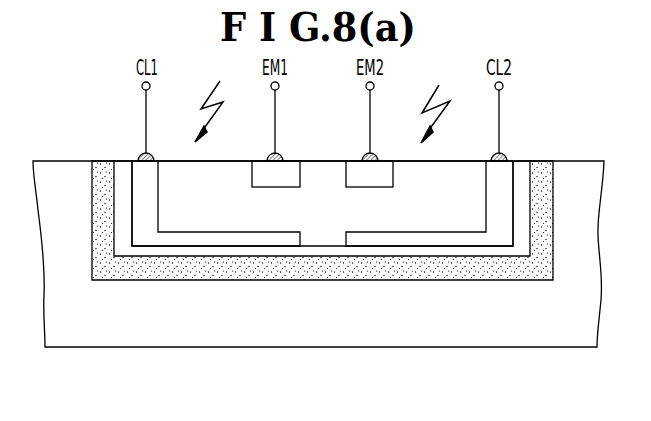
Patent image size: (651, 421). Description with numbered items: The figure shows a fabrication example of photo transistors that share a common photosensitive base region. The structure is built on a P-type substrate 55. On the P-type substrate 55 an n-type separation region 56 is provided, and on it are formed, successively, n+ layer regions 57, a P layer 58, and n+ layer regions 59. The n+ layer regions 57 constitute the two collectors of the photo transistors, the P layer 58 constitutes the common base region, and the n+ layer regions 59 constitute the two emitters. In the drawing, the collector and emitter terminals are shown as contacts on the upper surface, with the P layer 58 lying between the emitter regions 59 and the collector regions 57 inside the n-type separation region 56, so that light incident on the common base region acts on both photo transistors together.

The P-type substrate 55 is at (187, 340).
The n-type separation region 56 is at (431, 277).
The n+ layer regions 57 is at (230, 236).
The P layer 58 is at (325, 160).
The n+ layer regions 59 is at (258, 160).